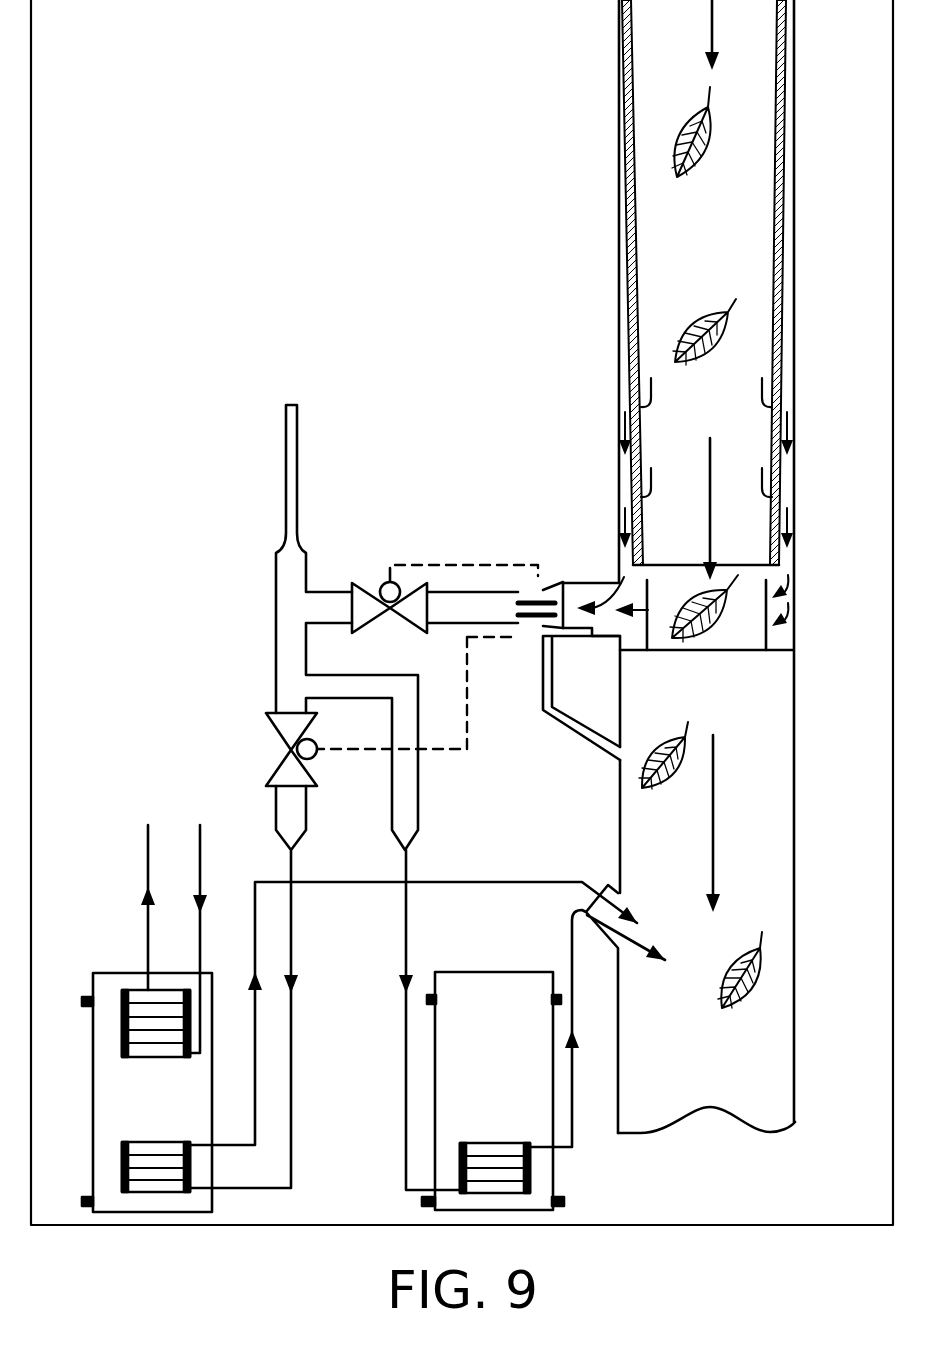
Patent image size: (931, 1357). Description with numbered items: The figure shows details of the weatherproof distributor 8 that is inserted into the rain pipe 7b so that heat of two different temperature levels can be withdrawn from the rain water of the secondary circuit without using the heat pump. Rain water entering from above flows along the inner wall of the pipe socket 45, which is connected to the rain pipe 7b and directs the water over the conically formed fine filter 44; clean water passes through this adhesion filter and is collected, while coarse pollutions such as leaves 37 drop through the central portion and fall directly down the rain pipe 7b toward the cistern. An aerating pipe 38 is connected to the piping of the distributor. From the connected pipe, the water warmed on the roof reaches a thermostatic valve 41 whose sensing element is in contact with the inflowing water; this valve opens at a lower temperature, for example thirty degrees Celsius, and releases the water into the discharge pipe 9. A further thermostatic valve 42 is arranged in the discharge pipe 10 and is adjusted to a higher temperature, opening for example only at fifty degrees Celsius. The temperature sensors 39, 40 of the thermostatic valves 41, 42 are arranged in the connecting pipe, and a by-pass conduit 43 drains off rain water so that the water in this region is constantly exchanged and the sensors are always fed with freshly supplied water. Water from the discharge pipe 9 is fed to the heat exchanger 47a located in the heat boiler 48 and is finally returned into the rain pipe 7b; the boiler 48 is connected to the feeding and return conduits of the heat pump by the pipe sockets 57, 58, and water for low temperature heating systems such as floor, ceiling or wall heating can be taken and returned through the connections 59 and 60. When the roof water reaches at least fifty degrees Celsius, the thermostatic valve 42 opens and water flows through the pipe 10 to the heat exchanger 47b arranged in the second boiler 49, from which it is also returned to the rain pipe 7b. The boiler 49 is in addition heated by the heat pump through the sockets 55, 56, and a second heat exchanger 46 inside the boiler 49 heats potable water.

The weatherproof distributor 8 is at (228, 110).
The pipe socket 45 is at (619, 40).
The fine filter 44 is at (632, 290).
The leaves 37 is at (680, 355).
The aerating pipe 38 is at (331, 627).
The temperature sensor 39 is at (543, 592).
The capillary bulb 40 is at (540, 622).
The thermostatic valve 41 is at (443, 591).
The thermostatic valve 42 is at (279, 749).
The by-pass conduit 43 is at (587, 740).
The second heat exchanger 46 is at (174, 923).
The discharge pipe 10 is at (248, 987).
The discharge pipe 9 is at (429, 1006).
The second boiler 49 is at (131, 1049).
The pipe socket 57 is at (429, 995).
The connection 59 is at (560, 995).
The heat boiler 48 is at (491, 1052).
The rain pipe 7b is at (706, 1073).
The socket 55 is at (86, 1007).
The socket 56 is at (84, 1197).
The heat exchanger 47b is at (156, 1150).
The heat exchanger 47a is at (495, 1151).
The pipe socket 58 is at (422, 1200).
The connection 60 is at (566, 1200).